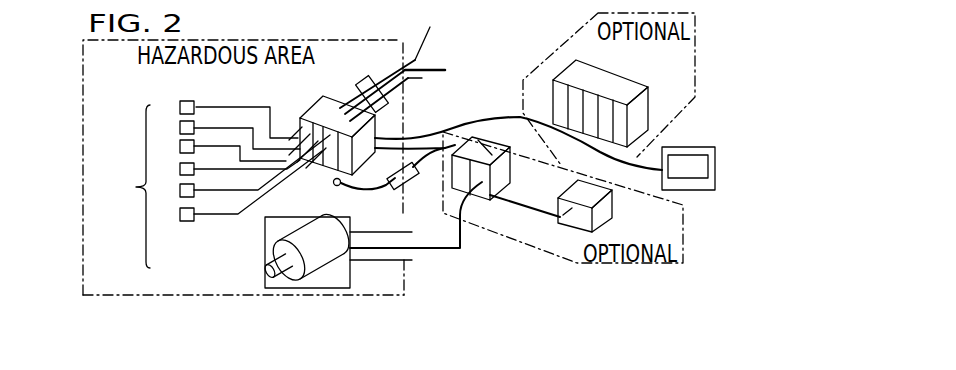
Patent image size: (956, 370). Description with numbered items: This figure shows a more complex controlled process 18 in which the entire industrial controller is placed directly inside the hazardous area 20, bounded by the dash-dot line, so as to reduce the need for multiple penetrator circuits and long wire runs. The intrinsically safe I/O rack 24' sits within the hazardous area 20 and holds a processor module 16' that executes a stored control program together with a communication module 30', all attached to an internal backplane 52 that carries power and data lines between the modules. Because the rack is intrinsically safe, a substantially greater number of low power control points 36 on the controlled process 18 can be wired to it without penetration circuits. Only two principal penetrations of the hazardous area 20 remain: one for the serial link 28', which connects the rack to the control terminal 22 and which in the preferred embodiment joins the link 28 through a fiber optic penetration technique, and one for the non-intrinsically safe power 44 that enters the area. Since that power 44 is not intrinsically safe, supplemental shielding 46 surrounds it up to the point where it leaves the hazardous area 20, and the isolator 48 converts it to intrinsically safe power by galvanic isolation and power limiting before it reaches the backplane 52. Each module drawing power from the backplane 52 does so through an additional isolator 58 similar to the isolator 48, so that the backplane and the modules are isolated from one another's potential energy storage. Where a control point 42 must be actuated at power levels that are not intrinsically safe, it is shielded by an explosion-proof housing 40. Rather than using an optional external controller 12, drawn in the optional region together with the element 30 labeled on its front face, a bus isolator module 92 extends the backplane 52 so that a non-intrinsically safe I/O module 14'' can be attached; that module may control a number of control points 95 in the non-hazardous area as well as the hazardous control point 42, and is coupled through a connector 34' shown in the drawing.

The external controller 12 is at (632, 80).
The non-intrinsically safe I/O module 14'' is at (458, 192).
The processor module 16' is at (319, 121).
The controlled process 18 is at (219, 186).
The hazardous area 20 is at (83, 120).
The control terminal 22 is at (715, 155).
The I/O rack 24' is at (373, 90).
The link 28 is at (518, 119).
The serial link 28' is at (390, 190).
The I/O cards 30 is at (570, 85).
The communication module 30' is at (314, 165).
The connector 34' is at (416, 200).
The control points 36 is at (179, 110).
The explosion-proof housing 40 is at (345, 289).
The control point 42 is at (317, 280).
The non-intrinsically safe power 44 is at (440, 68).
The supplemental shielding 46 is at (428, 31).
The isolator 48 is at (368, 88).
The backplane 52 is at (420, 134).
The isolator 58 is at (116, 305).
The bus isolator module 92 is at (466, 160).
The control points 95 is at (612, 213).